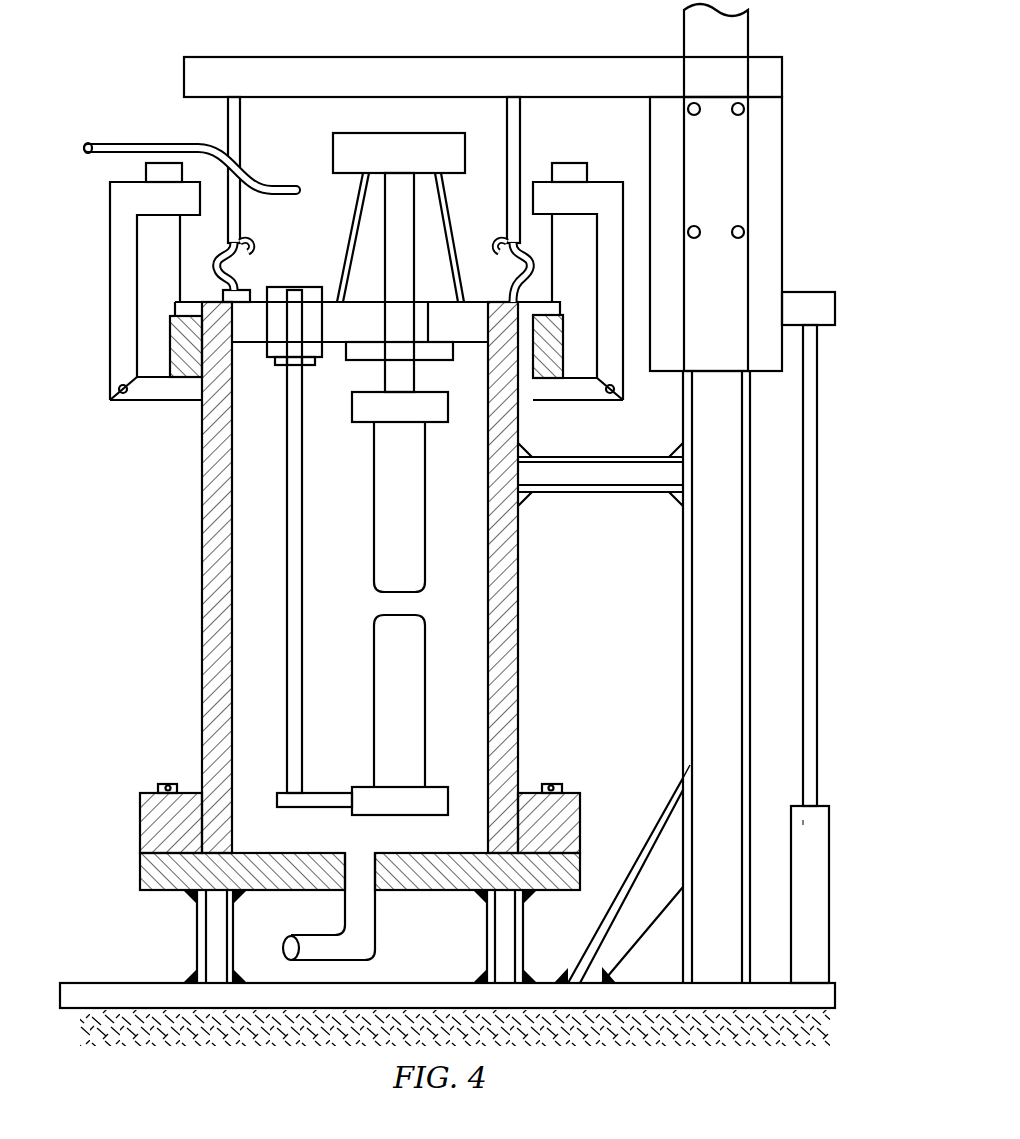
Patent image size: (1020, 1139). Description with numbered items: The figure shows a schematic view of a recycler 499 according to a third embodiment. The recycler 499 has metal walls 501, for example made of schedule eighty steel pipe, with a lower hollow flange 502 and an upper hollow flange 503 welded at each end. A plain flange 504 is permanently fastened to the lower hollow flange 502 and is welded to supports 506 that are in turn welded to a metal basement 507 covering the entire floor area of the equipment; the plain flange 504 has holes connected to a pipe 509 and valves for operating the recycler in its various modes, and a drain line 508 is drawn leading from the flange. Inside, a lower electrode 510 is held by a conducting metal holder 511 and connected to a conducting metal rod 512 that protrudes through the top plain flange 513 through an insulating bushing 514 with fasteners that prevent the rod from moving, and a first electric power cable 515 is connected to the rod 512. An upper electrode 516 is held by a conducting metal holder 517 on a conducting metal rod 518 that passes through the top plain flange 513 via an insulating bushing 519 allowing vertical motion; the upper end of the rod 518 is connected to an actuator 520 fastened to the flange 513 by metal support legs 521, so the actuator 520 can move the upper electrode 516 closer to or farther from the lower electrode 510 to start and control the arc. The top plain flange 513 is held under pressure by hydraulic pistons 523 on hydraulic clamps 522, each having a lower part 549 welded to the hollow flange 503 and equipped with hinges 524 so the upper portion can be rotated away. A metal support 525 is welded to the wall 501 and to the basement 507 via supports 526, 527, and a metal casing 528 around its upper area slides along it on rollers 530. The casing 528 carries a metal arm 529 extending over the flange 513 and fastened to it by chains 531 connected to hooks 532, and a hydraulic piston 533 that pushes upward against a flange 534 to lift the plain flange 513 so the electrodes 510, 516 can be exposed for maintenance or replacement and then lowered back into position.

The recycler 499 is at (156, 88).
The metal walls 501 is at (212, 598).
The lower hollow flange 502 is at (154, 796).
The upper hollow flange 503 is at (545, 356).
The plain flange 504 is at (196, 872).
The supports 506 is at (198, 943).
The metal basement 507 is at (447, 998).
The drain pipe 508 is at (358, 864).
The pipe 509 is at (558, 794).
The lower electrode 510 is at (402, 709).
The conducting metal holder 511 is at (368, 794).
The conducting metal rod 512 is at (298, 641).
The top plain flange 513 is at (360, 325).
The insulating bushing 514 is at (276, 364).
The first electric power cable 515 is at (132, 143).
The upper electrode 516 is at (400, 542).
The conducting metal holder 517 is at (384, 420).
The conducting metal rod 518 is at (405, 210).
The insulating bushing 519 is at (374, 300).
The actuator 520 is at (405, 145).
The metal support legs 521 is at (362, 194).
The hydraulic clamps 522 is at (122, 322).
The hydraulic pistons 523 is at (160, 172).
The hinges 524 is at (118, 389).
The metal support 525 is at (700, 638).
The support 526 is at (622, 468).
The support 527 is at (664, 870).
The metal casing 528 is at (760, 218).
The metal arm 529 is at (338, 76).
The rollers 530 is at (744, 115).
The chains 531 is at (242, 136).
The hooks 532 is at (246, 244).
The hydraulic piston 533 is at (800, 822).
The flange 534 is at (800, 292).
The lower part 549 is at (150, 398).